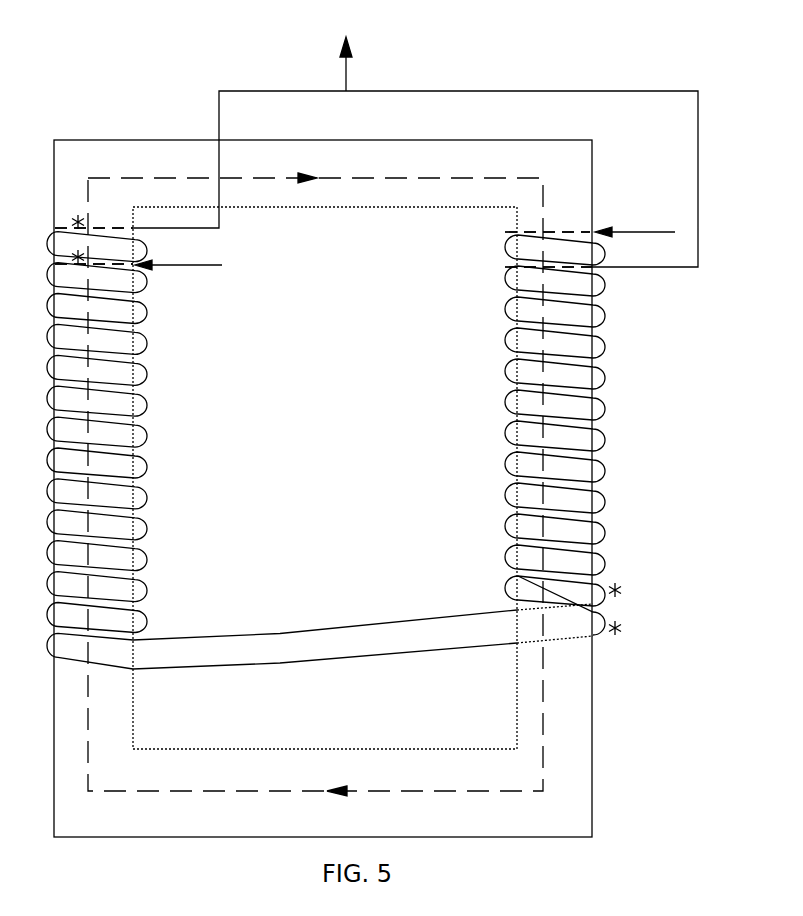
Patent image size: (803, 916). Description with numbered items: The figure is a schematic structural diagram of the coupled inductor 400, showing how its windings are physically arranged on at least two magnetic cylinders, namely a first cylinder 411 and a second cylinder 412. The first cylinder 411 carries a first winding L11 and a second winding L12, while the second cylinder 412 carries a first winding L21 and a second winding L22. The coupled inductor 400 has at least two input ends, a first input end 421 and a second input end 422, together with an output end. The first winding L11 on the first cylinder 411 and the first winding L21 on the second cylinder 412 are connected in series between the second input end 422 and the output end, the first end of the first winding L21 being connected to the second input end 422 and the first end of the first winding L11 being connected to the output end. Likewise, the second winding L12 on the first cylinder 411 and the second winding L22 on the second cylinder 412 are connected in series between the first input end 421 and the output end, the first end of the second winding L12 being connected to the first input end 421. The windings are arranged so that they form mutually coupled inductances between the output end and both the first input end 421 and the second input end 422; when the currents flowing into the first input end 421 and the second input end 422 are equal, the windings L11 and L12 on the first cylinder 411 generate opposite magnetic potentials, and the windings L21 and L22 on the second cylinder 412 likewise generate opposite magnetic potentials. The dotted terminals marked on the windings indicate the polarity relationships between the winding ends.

The coupled inductor 400 is at (104, 68).
The first cylinder 411 is at (134, 700).
The second cylinder 412 is at (592, 729).
The first input end 421 is at (159, 448).
The second input end 422 is at (590, 400).
The first winding on the first cylinder L11 is at (94, 210).
The second winding on the first cylinder L12 is at (94, 251).
The first winding on the second cylinder L21 is at (547, 215).
The second winding on the second cylinder L22 is at (548, 252).